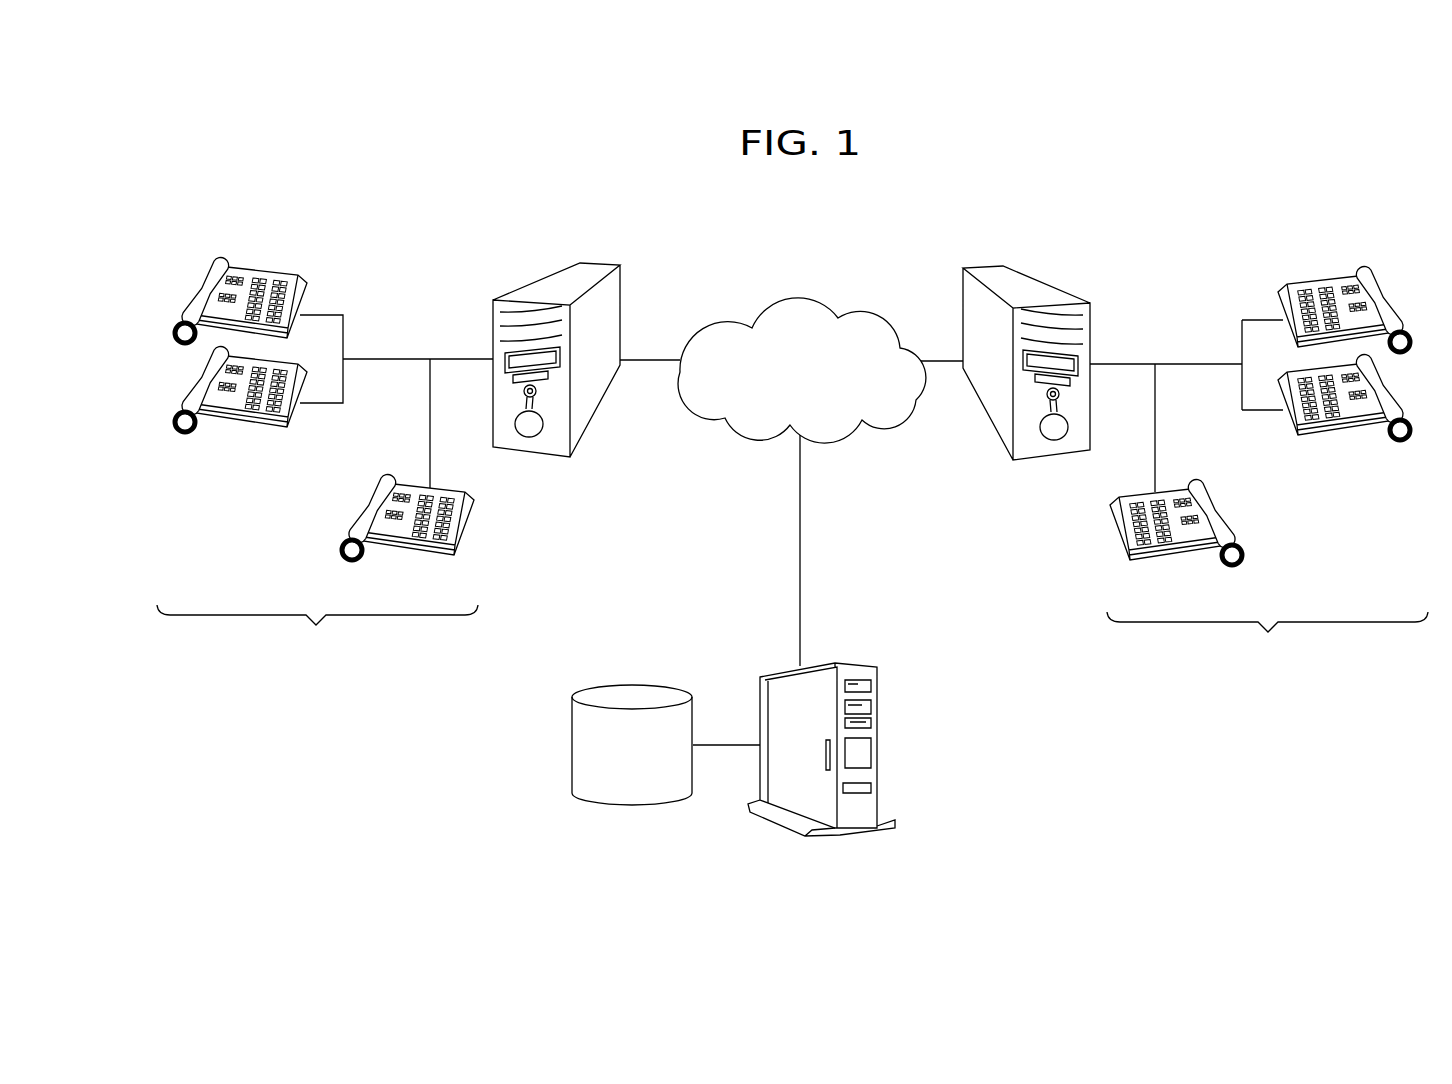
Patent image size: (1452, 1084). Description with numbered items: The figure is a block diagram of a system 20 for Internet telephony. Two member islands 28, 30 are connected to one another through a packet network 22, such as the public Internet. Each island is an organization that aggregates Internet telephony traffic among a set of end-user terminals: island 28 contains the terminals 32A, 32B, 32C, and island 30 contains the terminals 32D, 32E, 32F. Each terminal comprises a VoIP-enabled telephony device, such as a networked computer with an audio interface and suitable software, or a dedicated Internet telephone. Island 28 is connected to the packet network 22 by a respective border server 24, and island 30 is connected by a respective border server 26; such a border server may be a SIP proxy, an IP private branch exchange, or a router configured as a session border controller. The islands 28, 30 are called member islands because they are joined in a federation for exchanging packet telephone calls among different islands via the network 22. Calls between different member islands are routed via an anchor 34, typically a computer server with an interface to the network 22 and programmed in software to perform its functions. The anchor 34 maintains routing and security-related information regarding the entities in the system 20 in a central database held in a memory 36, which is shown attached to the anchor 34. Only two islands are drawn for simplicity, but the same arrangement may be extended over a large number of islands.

The system 20 is at (367, 157).
The packet network 22 is at (780, 317).
The border server 24 is at (621, 295).
The border server 26 is at (963, 298).
The member island 28 is at (317, 633).
The member island 30 is at (1267, 639).
The terminal 32A is at (402, 547).
The terminal 32B is at (252, 423).
The terminal 32C is at (276, 272).
The terminal 32D is at (1183, 553).
The terminal 32E is at (1333, 430).
The terminal 32F is at (1311, 279).
The anchor 34 is at (840, 666).
The memory 36 is at (640, 688).